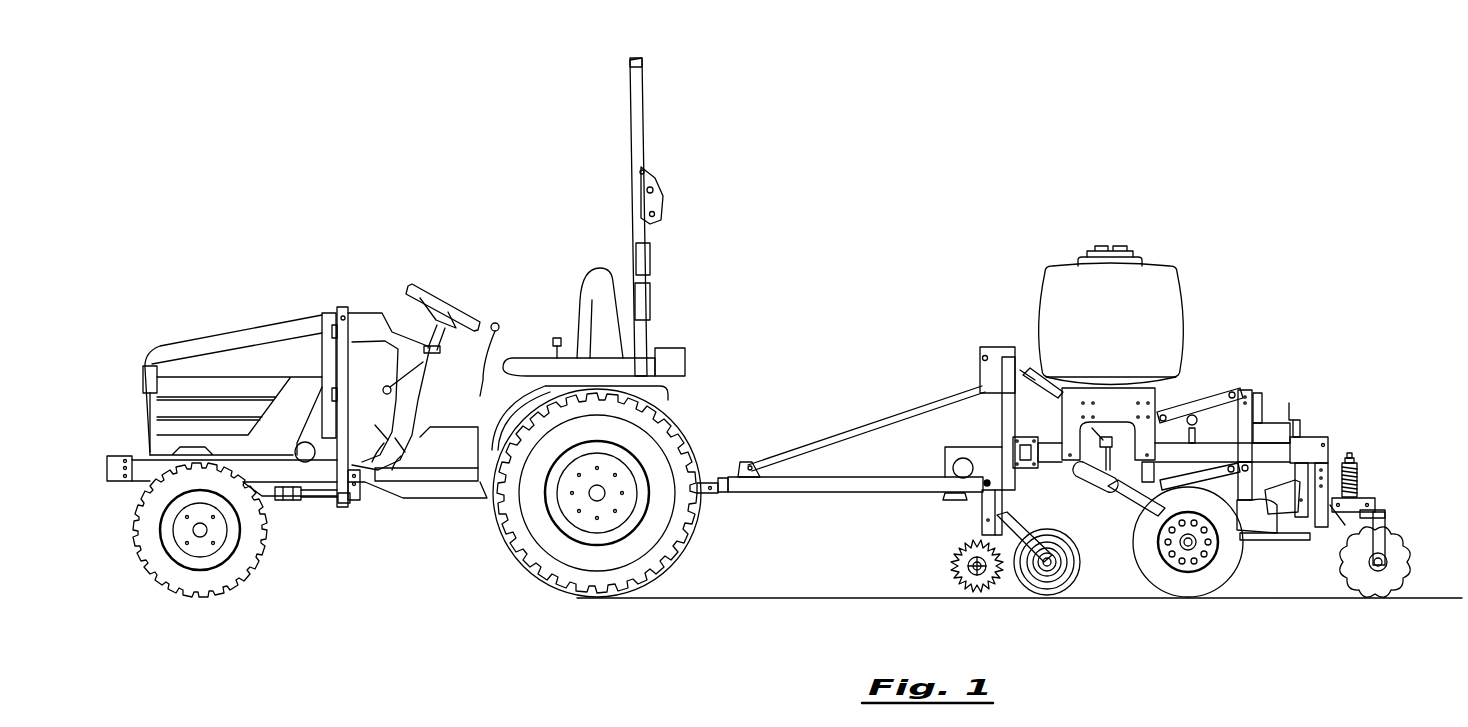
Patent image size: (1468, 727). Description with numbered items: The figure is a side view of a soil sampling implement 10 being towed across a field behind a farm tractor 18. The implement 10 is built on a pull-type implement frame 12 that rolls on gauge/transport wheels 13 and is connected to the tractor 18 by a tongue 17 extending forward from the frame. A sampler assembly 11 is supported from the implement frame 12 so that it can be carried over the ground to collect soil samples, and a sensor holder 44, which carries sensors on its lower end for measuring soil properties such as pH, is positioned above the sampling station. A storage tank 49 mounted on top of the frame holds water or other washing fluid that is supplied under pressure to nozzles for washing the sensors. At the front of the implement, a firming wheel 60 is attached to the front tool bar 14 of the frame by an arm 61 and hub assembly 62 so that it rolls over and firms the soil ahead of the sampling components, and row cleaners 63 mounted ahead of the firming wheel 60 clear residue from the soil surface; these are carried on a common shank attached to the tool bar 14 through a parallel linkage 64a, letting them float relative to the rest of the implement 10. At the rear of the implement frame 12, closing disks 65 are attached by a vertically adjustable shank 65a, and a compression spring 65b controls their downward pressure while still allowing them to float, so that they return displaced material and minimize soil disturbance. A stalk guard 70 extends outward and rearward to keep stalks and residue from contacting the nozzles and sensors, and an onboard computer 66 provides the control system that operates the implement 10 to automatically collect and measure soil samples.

The soil sampling implement 10 is at (1302, 348).
The sampler assembly 11 is at (1255, 528).
The implement frame 12 is at (1280, 450).
The gauge/transport wheels 13 is at (1188, 588).
The front tool bar 14 is at (1030, 455).
The tongue 17 is at (822, 485).
The farm tractor 18 is at (257, 330).
The sensor holder 44 is at (1290, 527).
The storage tank 49 is at (1167, 305).
The firming wheel 60 is at (1063, 590).
The arm 61 is at (1030, 585).
The hub assembly 62 is at (1047, 573).
The row cleaners 63 is at (967, 582).
The parallel linkage 64a is at (982, 495).
The closing disks 65 is at (1395, 547).
The vertically adjustable shank 65a is at (1323, 468).
The compression spring 65b is at (1353, 478).
The onboard computer 66 is at (1312, 447).
The stalk guard 70 is at (1278, 530).